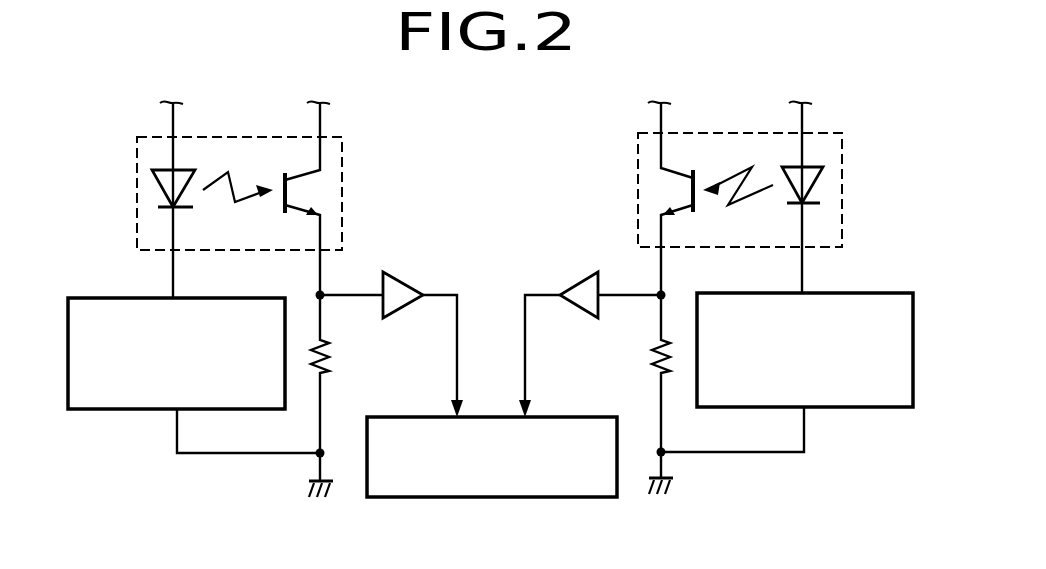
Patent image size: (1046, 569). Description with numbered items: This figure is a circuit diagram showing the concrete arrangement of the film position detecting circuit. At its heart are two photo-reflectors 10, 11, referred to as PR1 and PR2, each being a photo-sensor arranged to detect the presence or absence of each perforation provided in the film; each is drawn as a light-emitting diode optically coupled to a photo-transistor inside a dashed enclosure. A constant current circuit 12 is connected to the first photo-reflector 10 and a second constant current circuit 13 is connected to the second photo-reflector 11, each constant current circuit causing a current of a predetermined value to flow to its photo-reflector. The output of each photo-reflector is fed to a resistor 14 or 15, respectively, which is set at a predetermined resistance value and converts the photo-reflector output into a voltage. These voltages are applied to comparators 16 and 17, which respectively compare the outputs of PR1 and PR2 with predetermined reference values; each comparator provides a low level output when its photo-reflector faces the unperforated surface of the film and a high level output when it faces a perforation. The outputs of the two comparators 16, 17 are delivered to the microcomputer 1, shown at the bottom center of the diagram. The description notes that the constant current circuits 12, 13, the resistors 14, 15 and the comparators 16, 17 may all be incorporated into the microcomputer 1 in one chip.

The microcomputer 1 is at (492, 417).
The photo-reflector 10 is at (342, 140).
The photo-reflector 11 is at (637, 149).
The constant current circuit 12 is at (102, 412).
The constant current circuit 13 is at (867, 408).
The resistor 14 is at (332, 356).
The resistor 15 is at (650, 367).
The comparator 16 is at (405, 282).
The comparator 17 is at (570, 284).